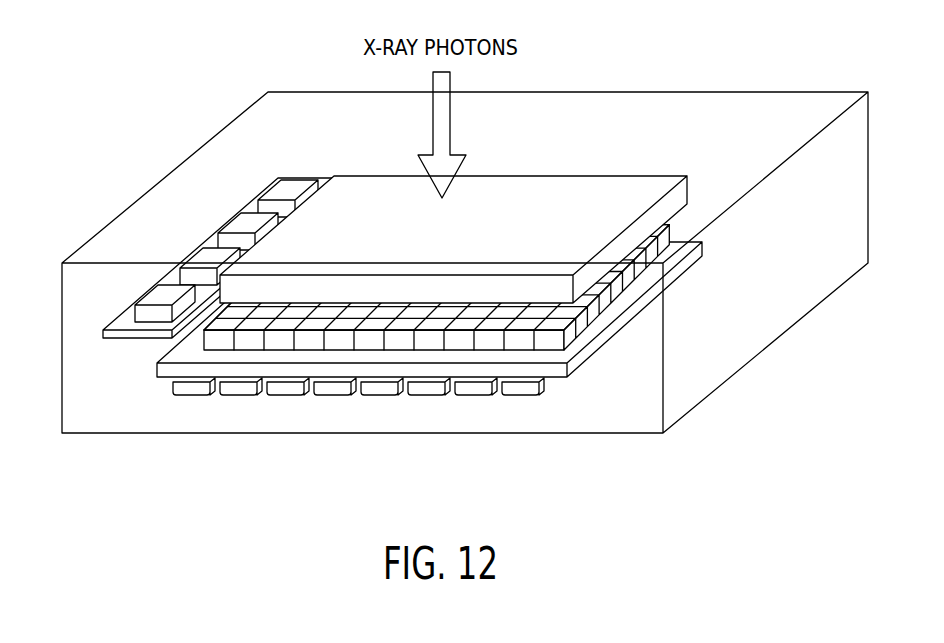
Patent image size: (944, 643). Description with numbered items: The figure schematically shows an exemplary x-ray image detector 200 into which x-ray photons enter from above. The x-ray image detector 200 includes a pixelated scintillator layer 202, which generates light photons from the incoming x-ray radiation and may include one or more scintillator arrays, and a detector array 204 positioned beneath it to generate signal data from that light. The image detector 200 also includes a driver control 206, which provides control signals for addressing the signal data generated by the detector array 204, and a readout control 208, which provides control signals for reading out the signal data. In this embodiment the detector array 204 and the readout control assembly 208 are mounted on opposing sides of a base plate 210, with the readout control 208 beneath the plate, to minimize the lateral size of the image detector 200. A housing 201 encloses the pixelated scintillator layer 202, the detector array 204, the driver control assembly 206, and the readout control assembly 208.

The x-ray image detector 200 is at (457, 238).
The housing 201 is at (828, 91).
The pixelated scintillator layer 202 is at (580, 175).
The detector array 204 is at (683, 223).
The driver control 206 is at (212, 243).
The readout control 208 is at (172, 383).
The base plate 210 is at (157, 373).